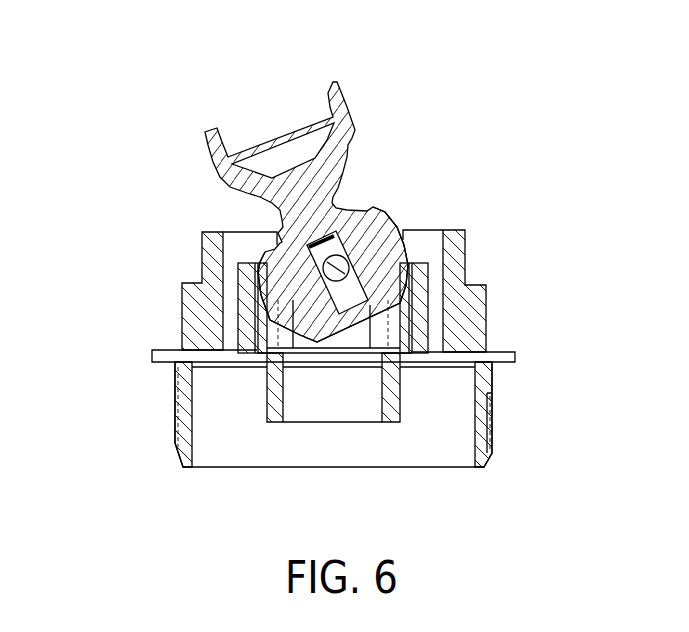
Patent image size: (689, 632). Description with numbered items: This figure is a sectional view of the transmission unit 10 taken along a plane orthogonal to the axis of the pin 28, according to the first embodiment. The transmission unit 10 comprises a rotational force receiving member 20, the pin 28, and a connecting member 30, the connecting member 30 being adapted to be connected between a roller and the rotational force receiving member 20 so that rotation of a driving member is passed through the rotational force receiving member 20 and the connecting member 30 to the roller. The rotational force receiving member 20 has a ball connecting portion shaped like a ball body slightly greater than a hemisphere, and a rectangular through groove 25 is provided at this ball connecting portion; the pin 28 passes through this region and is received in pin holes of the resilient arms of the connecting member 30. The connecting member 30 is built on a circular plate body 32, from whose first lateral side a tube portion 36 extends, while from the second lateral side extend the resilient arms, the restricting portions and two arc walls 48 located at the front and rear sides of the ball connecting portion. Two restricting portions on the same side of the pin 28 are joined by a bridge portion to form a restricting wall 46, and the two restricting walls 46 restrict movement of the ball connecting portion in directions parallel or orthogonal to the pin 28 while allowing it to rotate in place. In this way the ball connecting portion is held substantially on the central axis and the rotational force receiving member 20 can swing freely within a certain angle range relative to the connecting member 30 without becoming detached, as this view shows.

The transmission unit 10 is at (128, 113).
The rotational force receiving member 20 is at (335, 188).
The rectangular through groove 25 is at (300, 250).
The pin 28 is at (345, 258).
The connecting member 30 is at (182, 378).
The circular plate body 32 is at (507, 352).
The tube portion 36 is at (483, 408).
The restricting wall 46 is at (420, 293).
The arc wall 48 is at (200, 258).